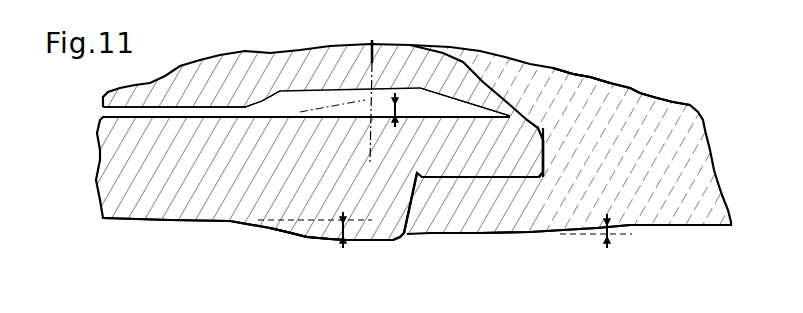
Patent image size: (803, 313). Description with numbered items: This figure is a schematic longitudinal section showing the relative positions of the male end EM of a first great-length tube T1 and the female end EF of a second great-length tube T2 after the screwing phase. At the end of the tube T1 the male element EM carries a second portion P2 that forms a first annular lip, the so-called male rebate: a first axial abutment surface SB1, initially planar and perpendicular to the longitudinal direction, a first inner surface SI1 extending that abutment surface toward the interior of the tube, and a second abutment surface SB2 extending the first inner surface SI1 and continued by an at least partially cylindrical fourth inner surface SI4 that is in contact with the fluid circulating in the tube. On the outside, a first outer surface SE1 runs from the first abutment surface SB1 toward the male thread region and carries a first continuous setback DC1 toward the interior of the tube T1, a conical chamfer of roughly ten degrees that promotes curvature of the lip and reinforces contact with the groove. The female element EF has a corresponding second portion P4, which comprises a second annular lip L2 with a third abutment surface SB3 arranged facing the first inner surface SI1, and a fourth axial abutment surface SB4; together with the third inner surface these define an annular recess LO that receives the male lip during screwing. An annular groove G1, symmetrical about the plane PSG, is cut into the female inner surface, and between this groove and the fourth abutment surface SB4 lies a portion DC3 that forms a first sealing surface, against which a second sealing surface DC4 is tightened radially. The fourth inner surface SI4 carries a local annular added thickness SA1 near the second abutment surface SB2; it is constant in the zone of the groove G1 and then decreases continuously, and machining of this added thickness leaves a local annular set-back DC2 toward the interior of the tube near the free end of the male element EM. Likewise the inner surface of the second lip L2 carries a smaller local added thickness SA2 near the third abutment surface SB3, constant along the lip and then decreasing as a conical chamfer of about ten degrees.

The first great length tube T1 is at (110, 222).
The second great length tube T2 is at (726, 205).
The first outer surface SE1 is at (425, 108).
The annular recess LO is at (454, 107).
The annular groove G1 is at (436, 106).
The first setback DC1 is at (250, 104).
The plane of symmetry of the groove PSG is at (372, 40).
The first sealing surface portion DC3 is at (536, 119).
The female tubular element EF is at (634, 86).
The fourth axial abutment surface SB4 is at (547, 138).
The second sealing surface DC4 is at (547, 158).
The first axial abutment surface SB1 is at (539, 158).
The third abutment surface SB3 is at (427, 200).
The first inner surface SI1 is at (403, 202).
The added thickness SA1 is at (400, 248).
The second annular lip L2 is at (477, 234).
The added thickness SA2 is at (548, 236).
The second portion P4 is at (671, 233).
The second abutment surface SB2 is at (291, 216).
The fourth inner surface SI4 is at (306, 222).
The local annular set-back DC2 is at (293, 232).
The second portion P2 is at (316, 243).
The male tubular element EM is at (193, 224).